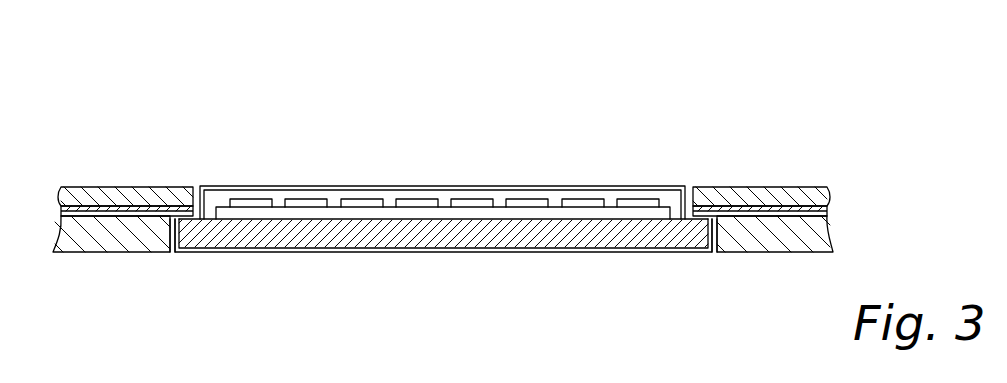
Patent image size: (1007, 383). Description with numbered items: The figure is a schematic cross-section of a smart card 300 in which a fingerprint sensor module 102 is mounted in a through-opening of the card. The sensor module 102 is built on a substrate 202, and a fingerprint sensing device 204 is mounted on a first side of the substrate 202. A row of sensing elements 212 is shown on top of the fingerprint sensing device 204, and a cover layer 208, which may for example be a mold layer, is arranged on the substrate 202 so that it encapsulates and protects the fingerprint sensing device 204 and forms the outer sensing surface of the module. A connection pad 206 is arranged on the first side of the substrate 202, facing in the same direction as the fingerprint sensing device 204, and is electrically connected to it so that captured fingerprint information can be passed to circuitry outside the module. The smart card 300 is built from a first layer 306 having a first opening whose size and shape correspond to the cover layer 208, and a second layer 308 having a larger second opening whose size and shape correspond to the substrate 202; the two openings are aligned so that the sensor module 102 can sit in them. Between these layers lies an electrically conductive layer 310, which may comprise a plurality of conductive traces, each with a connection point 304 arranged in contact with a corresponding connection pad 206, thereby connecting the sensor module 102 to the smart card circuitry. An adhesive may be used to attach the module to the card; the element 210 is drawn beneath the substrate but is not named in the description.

The smart card 300 is at (147, 60).
The fingerprint sensor module 102 is at (305, 179).
The substrate 202 is at (558, 242).
The fingerprint sensing device 204 is at (571, 211).
The connection pad 206 is at (183, 221).
The cover layer 208 is at (230, 186).
The base substrate 210 is at (385, 252).
The sensing elements 212 is at (364, 207).
The connection point 304 is at (181, 207).
The first layer 306 is at (102, 187).
The second layer 308 is at (108, 250).
The electrically conductive layer 310 is at (797, 188).